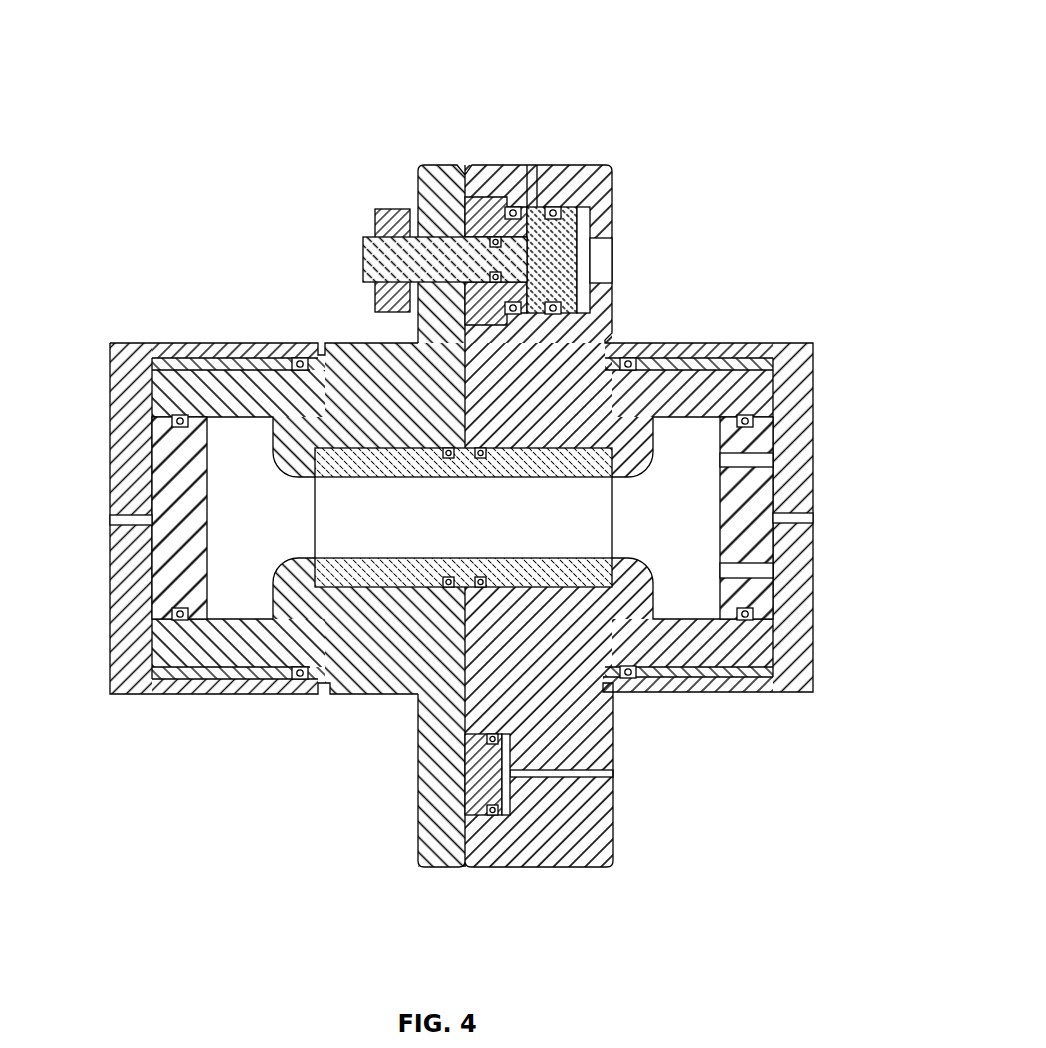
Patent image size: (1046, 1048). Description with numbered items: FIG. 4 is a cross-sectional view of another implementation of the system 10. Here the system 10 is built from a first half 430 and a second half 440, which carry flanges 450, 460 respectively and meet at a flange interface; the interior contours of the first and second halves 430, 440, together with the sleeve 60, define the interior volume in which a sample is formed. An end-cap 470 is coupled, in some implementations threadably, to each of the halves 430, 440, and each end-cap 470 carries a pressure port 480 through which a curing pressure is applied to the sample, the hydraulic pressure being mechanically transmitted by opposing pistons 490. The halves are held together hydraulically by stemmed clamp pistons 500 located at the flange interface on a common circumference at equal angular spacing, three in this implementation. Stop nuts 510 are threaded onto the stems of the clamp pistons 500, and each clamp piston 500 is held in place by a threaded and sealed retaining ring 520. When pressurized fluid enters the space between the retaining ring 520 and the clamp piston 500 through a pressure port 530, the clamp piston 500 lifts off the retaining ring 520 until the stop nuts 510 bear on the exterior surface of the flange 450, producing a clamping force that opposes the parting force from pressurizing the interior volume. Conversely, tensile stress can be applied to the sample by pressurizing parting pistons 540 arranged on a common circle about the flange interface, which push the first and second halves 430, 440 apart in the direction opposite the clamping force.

The system 10 is at (742, 58).
The sleeve 60 is at (402, 583).
The first half 430 is at (427, 183).
The second half 440 is at (609, 184).
The flange 450 is at (418, 848).
The flange 460 is at (603, 823).
The end-cap 470 is at (128, 352).
The pressure port 480 is at (117, 518).
The piston 490 is at (182, 517).
The stemmed clamp piston 500 is at (366, 255).
The stop nut 510 is at (377, 237).
The retaining ring 520 is at (492, 203).
The pressure port 530 is at (532, 170).
The parting piston 540 is at (473, 778).